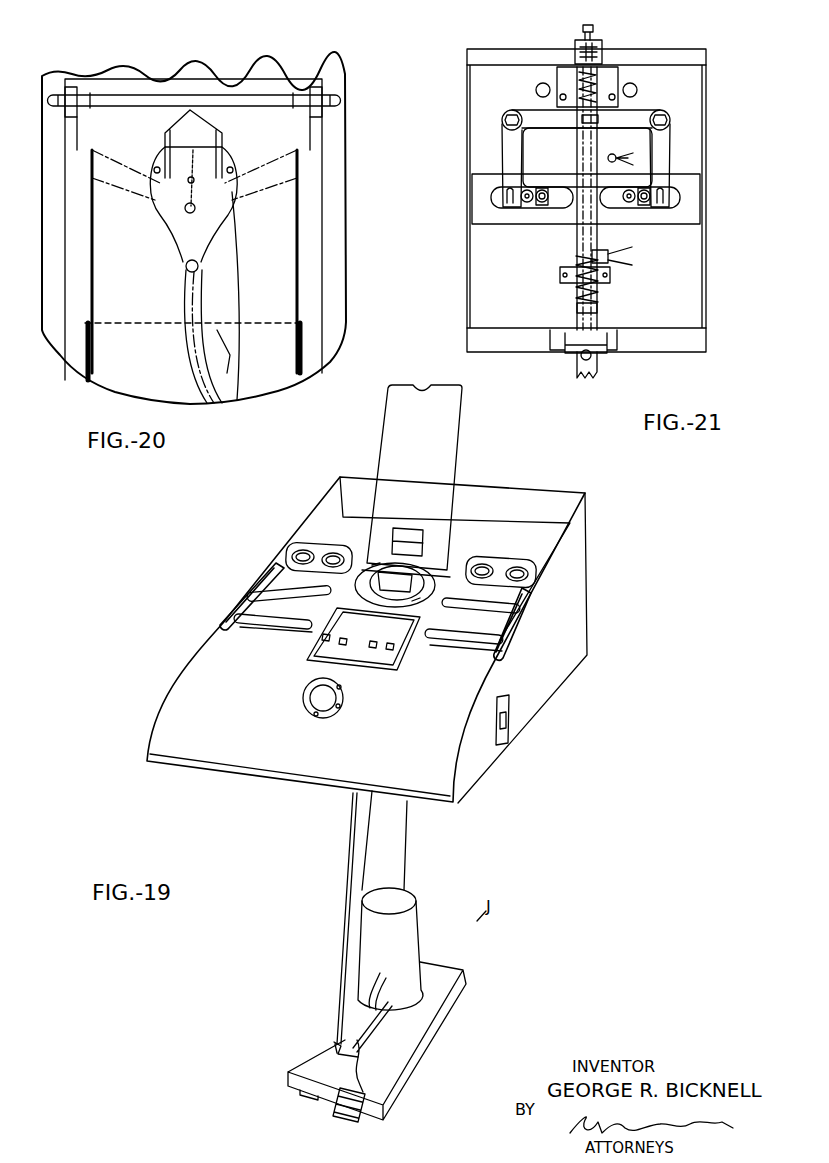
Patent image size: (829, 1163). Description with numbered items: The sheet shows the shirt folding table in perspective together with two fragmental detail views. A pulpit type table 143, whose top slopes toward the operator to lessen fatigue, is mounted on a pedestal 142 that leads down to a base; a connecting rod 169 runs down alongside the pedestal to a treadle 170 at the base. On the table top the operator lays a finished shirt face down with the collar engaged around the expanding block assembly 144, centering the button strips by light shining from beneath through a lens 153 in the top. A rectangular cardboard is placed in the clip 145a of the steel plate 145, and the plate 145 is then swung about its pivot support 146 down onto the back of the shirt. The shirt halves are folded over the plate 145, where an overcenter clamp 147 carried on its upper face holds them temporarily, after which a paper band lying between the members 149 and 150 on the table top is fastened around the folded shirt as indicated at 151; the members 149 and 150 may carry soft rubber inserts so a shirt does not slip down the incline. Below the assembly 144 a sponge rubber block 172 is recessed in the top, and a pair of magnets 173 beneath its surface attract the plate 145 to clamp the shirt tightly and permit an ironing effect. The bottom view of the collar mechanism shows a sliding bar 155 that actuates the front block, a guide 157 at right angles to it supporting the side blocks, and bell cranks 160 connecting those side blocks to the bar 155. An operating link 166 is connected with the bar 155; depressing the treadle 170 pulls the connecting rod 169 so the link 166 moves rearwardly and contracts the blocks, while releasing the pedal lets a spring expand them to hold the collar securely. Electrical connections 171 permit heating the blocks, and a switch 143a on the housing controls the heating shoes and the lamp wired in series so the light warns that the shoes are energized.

In FIG. 19, the pedestal 142 is at (407, 870).
In FIG. 19, the pulpit type table 143 is at (578, 576).
In FIG. 19, the switch 143a is at (505, 728).
In FIG. 19, the expanding block assembly 144 is at (440, 557).
In FIG. 20, the plate 145 is at (290, 141).
In FIG. 19, the plate 145 is at (452, 425).
In FIG. 19, the clip 145a is at (410, 528).
In FIG. 20, the pivot support 146 is at (302, 100).
In FIG. 19, the pivot support 146 is at (462, 561).
In FIG. 20, the overcenter clamp 147 is at (220, 170).
In FIG. 19, the member 149 is at (263, 625).
In FIG. 19, the member 150 is at (248, 593).
In FIG. 20, the paper band 151 is at (265, 323).
In FIG. 19, the lens 153 is at (310, 697).
In FIG. 21, the sliding bar 155 is at (580, 145).
In FIG. 21, the guide 157 is at (690, 208).
In FIG. 21, the bell cranks 160 is at (506, 147).
In FIG. 21, the operating link 166 is at (580, 295).
In FIG. 19, the connecting rod 169 is at (349, 871).
In FIG. 19, the treadle 170 is at (330, 1109).
In FIG. 21, the connections 171 is at (527, 205).
In FIG. 19, the sponge rubber block 172 is at (390, 662).
In FIG. 19, the magnets 173 is at (373, 648).